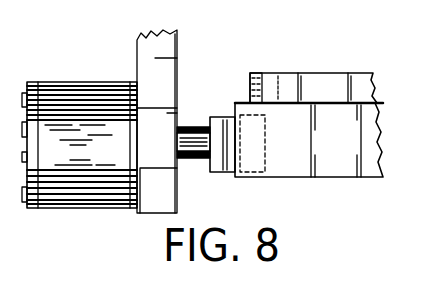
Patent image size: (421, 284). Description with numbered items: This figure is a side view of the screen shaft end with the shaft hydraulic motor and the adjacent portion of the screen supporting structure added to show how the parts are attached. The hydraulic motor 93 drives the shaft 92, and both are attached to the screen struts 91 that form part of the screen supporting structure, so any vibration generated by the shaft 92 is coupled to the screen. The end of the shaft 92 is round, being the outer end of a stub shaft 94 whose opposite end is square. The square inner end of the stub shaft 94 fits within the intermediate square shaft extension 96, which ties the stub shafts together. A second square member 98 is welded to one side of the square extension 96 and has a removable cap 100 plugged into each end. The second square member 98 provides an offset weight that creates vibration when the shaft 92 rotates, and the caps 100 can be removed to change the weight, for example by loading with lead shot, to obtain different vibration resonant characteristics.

The screen strut 91 is at (140, 65).
The shaft 92 is at (193, 127).
The hydraulic motor 93 is at (88, 82).
The stub shaft 94 is at (233, 170).
The intermediate square shaft extension 96 is at (343, 173).
The second square member 98 is at (352, 74).
The removable cap 100 is at (263, 73).